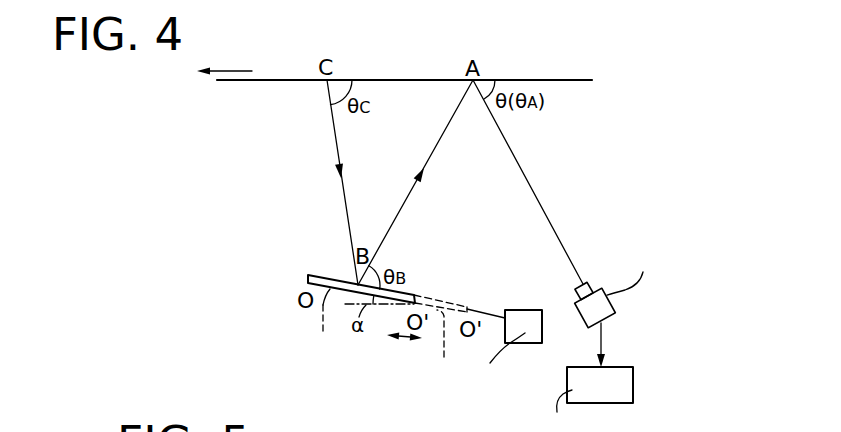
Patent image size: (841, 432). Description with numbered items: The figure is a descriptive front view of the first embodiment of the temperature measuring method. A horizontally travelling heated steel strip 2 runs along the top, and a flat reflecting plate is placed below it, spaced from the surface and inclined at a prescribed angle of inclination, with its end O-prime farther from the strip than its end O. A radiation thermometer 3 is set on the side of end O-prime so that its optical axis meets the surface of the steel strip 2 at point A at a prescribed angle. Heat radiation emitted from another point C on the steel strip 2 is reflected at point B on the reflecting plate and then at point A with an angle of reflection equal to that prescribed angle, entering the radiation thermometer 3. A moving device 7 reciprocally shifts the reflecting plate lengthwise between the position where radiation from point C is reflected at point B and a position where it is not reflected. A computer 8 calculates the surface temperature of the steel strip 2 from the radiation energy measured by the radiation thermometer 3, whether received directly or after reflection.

The steel strip 2 is at (417, 79).
The radiation thermometer 3 is at (603, 297).
The moving device 7 is at (523, 310).
The computer 8 is at (633, 383).